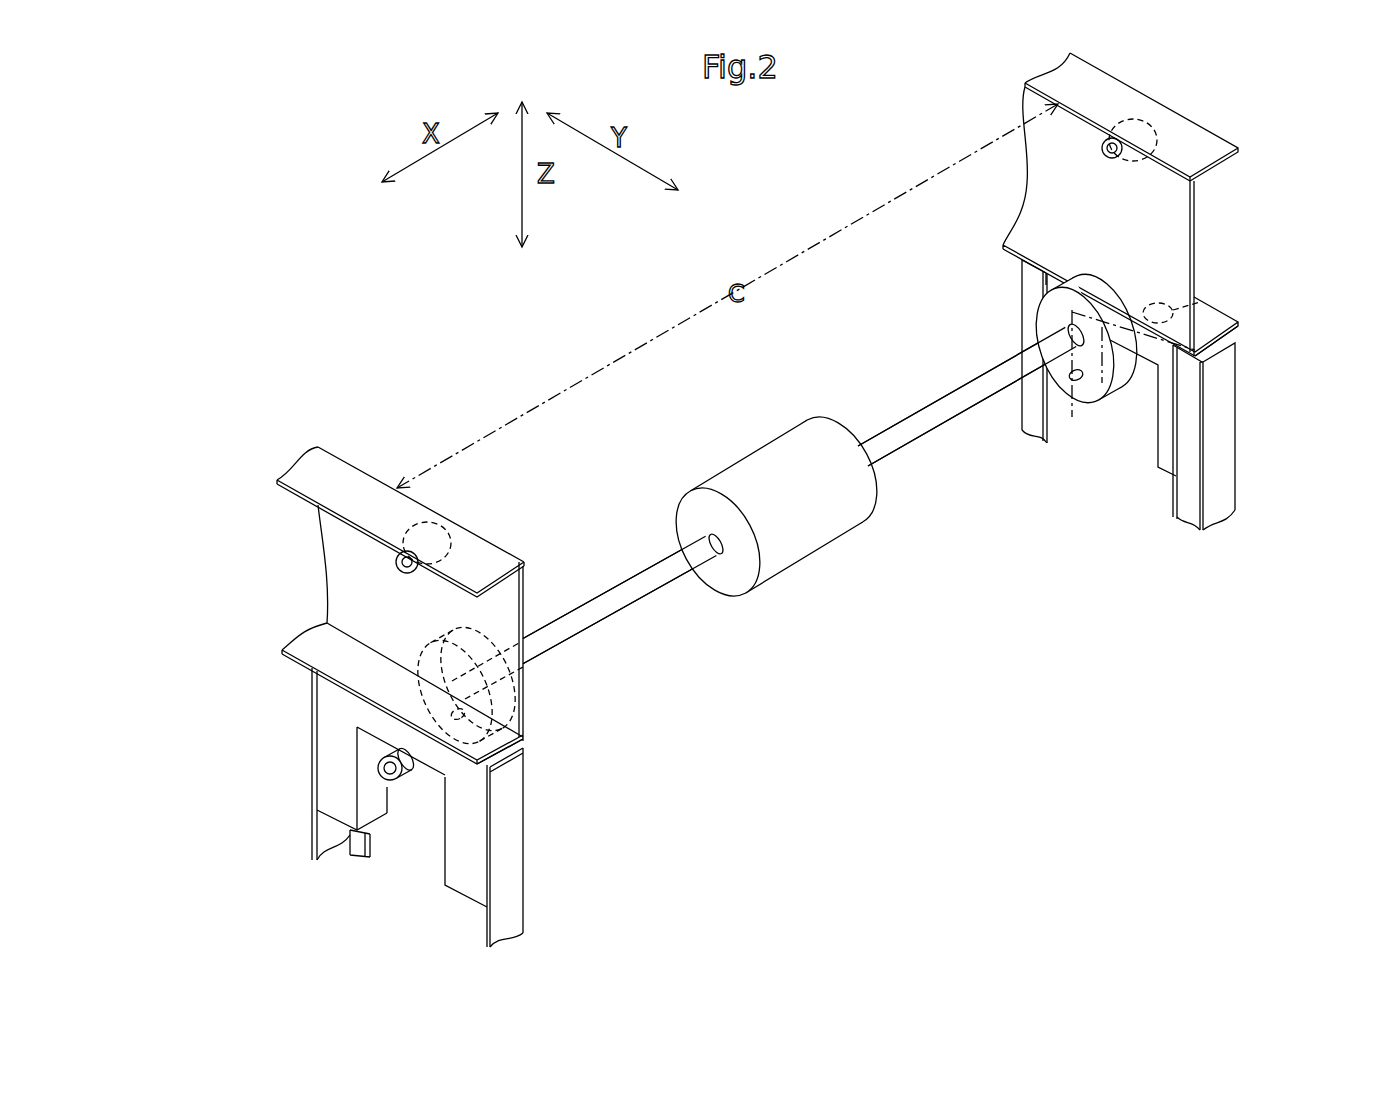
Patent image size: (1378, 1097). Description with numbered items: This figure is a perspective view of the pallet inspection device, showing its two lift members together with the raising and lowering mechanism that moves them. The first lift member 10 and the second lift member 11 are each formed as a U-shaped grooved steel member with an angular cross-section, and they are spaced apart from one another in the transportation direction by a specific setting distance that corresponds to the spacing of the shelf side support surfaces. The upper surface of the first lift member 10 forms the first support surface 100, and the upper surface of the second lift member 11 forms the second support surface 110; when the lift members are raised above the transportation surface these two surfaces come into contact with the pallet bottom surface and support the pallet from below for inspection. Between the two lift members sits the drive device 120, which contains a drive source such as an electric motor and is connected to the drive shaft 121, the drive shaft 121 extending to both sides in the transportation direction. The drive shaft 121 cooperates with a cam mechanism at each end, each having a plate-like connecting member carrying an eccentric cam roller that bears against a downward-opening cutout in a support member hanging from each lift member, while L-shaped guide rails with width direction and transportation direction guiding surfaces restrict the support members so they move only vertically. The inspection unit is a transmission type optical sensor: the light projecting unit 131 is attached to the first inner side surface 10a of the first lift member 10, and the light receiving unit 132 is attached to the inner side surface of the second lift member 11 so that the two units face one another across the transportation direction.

The first lift member 10 is at (1242, 273).
The first inner side surface 10a is at (1040, 163).
The second lift member 11 is at (295, 528).
The first support surface 100 is at (1208, 125).
The second support surface 110 is at (342, 488).
The drive device 120 is at (802, 530).
The drive shaft 121 is at (905, 432).
The light projecting unit 131 is at (1140, 130).
The light receiving unit 132 is at (400, 568).